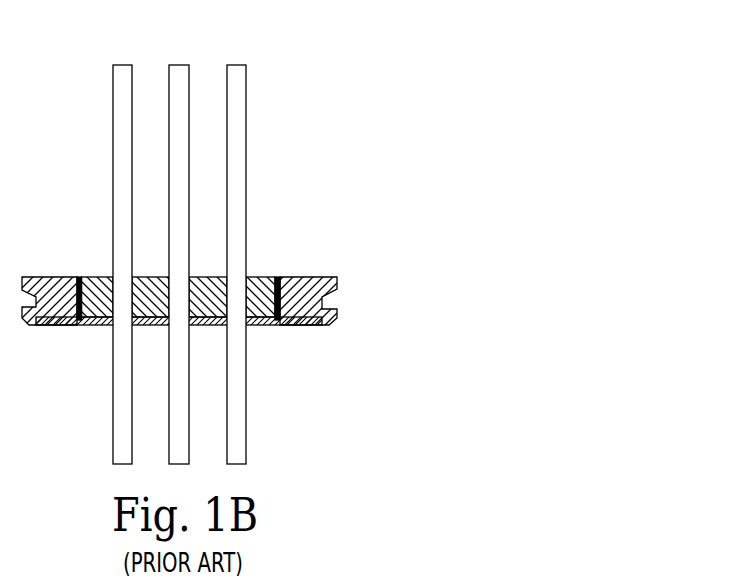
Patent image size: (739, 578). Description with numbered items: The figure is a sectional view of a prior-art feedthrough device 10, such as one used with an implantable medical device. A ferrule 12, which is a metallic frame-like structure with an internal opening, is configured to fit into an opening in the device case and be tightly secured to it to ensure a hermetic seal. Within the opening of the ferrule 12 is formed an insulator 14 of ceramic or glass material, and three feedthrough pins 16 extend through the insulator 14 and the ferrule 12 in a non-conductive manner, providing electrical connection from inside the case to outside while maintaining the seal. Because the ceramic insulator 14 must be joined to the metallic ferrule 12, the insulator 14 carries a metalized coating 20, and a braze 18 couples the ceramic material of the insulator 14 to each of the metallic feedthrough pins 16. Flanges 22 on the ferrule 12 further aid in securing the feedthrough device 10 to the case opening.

The feedthrough device 10 is at (221, 237).
The ferrule 12 is at (307, 325).
The insulator 14 is at (270, 279).
The feedthrough pins 16 is at (123, 72).
The braze 18 is at (111, 277).
The metalized coating 20 is at (79, 277).
The flanges 22 is at (328, 292).